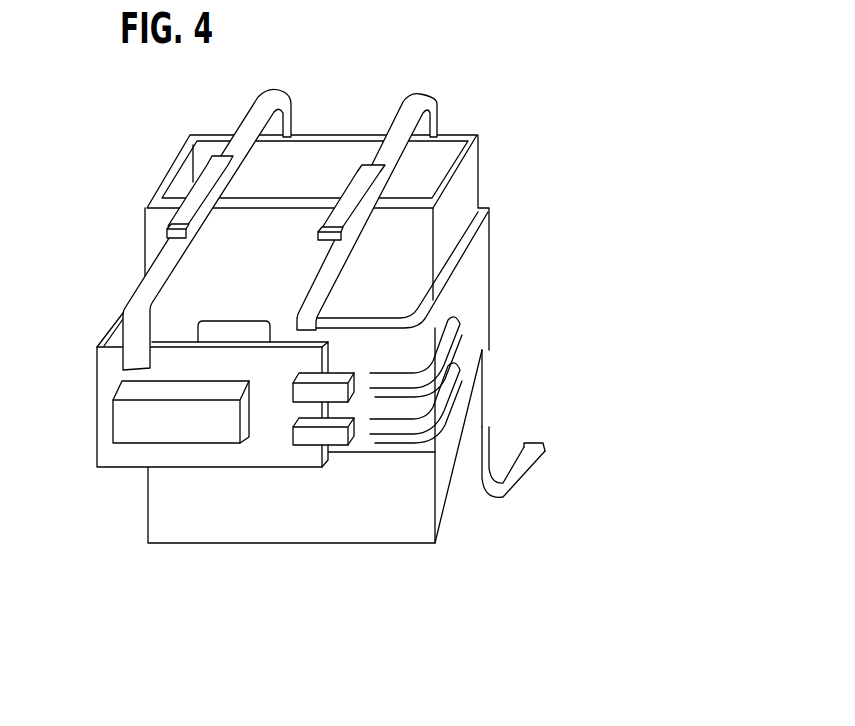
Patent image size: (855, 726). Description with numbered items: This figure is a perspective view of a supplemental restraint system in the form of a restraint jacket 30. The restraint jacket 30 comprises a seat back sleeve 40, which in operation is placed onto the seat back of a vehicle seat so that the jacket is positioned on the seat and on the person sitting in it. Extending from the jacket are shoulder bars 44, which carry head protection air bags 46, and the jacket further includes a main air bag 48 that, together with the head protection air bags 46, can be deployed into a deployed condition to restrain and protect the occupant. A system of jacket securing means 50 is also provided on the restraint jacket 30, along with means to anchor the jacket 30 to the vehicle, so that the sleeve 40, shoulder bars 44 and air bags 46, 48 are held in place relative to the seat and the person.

The restraint jacket 30 is at (483, 313).
The seat back sleeve 40 is at (343, 157).
The shoulder bars 44 is at (253, 117).
The head protection air bags 46 is at (182, 218).
The main air bag 48 is at (128, 432).
The jacket securing means 50 is at (437, 349).